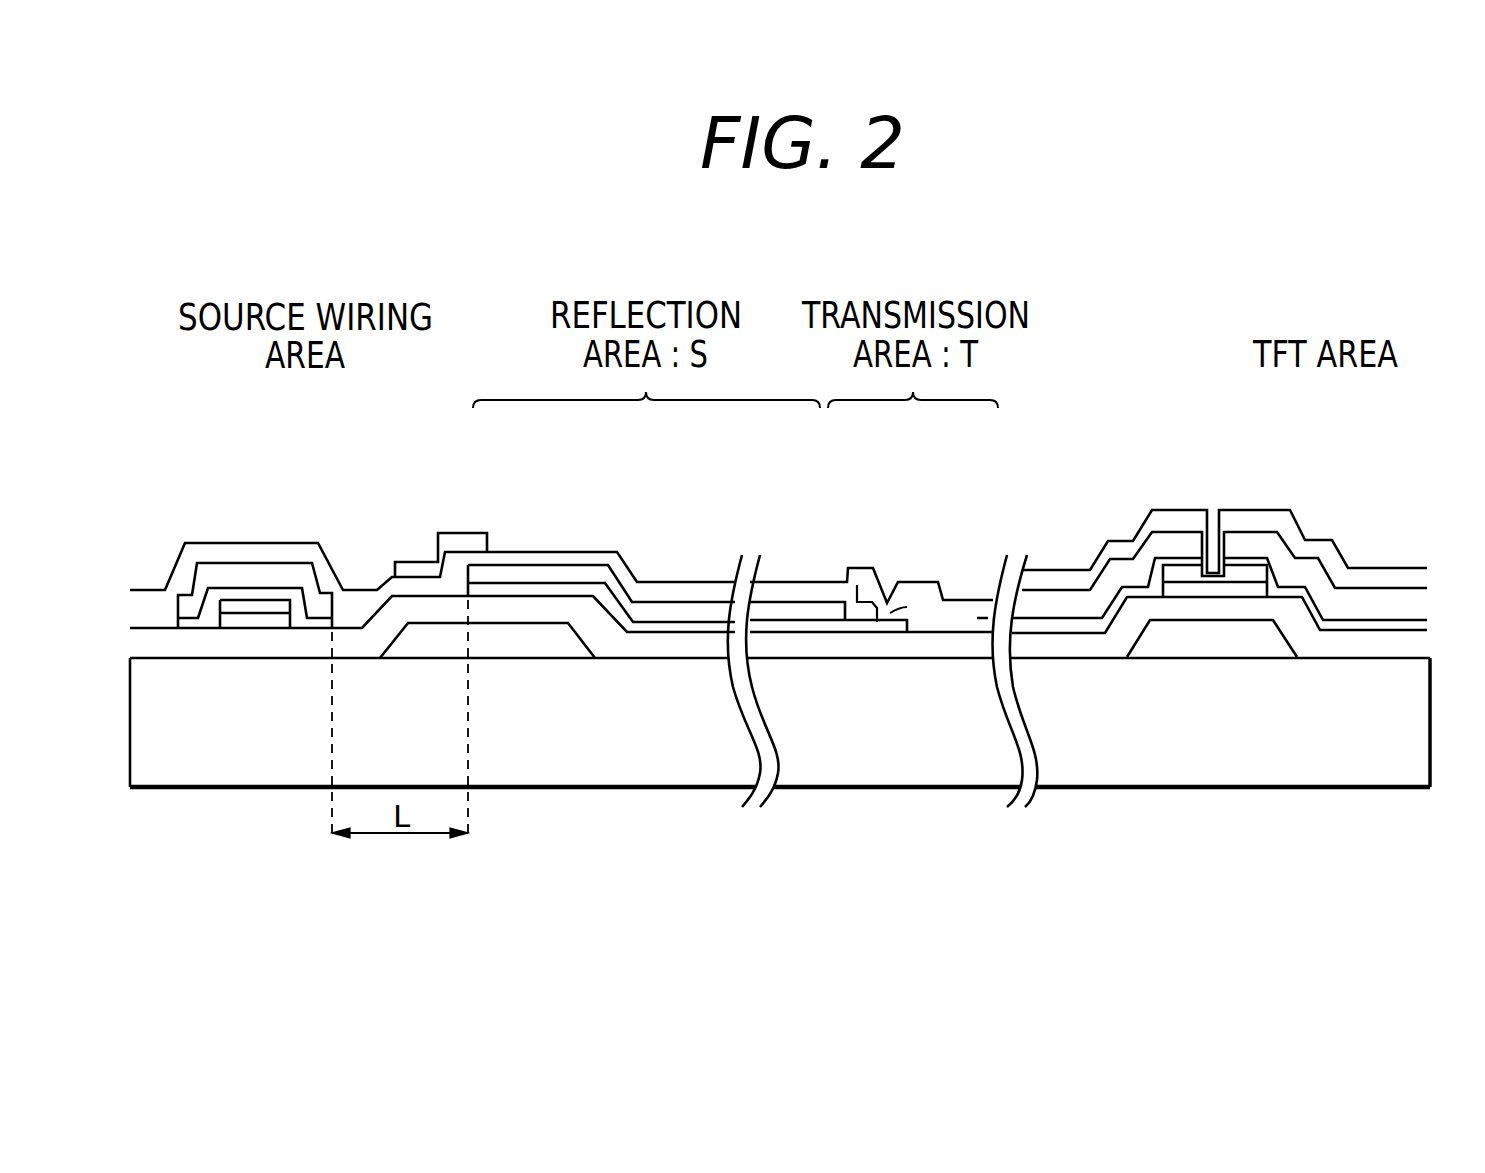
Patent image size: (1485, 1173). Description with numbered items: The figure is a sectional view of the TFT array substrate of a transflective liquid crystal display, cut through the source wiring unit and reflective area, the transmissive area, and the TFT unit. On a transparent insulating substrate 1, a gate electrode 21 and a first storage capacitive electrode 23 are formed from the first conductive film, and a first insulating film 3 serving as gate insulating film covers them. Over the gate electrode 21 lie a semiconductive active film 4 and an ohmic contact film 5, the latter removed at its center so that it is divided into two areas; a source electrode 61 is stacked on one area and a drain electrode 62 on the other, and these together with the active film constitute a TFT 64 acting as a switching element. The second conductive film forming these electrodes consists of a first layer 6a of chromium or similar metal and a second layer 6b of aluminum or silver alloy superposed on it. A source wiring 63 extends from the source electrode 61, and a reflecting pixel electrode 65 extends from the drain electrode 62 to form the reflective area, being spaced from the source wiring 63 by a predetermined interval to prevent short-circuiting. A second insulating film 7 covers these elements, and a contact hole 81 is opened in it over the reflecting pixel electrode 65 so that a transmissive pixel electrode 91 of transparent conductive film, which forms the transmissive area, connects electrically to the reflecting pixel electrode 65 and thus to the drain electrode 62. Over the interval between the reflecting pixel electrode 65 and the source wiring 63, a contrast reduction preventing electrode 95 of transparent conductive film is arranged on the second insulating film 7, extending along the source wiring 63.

The transparent insulating substrate 1 is at (1393, 763).
The first insulating film 3 is at (645, 650).
The semiconductive active film 4 is at (1257, 580).
The ohmic contact film 5 is at (1243, 572).
The first layer 6a is at (242, 593).
The second layer 6b is at (287, 575).
The second insulating film 7 is at (630, 580).
The gate electrode 21 is at (1183, 638).
The first storage capacitive electrode 23 is at (542, 638).
The source electrode 61 is at (1127, 461).
The drain electrode 62 is at (1450, 490).
The source wiring 63 is at (295, 455).
The TFT 64 is at (1273, 788).
The reflecting pixel electrode 65 is at (608, 471).
The contact hole 81 is at (890, 578).
The transmissive pixel electrode 91 is at (862, 565).
The contrast reduction preventing electrode 95 is at (412, 568).